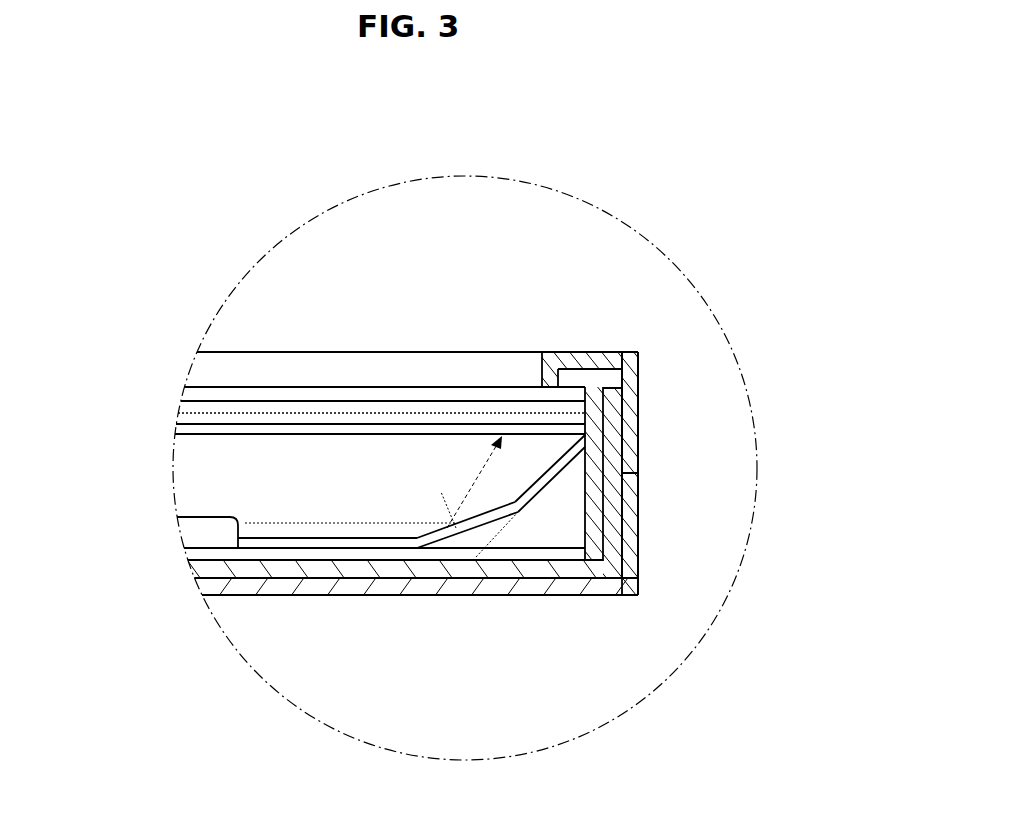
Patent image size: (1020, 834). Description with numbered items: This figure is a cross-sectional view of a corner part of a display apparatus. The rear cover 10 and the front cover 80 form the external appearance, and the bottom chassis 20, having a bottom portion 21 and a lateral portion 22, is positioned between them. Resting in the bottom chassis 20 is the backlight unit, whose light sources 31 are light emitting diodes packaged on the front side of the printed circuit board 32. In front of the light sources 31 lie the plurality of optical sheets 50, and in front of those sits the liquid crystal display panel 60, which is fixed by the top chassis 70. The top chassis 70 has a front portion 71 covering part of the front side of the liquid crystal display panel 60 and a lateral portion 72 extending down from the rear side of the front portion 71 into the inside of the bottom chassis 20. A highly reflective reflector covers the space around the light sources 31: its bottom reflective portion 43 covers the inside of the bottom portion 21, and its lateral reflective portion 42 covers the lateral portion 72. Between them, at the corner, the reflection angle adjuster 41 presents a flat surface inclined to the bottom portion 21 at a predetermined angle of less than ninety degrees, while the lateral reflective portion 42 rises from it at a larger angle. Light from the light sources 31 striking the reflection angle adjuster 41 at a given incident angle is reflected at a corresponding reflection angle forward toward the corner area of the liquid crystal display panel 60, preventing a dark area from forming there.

The rear cover 10 is at (380, 588).
The bottom chassis 20 is at (825, 643).
The bottom portion of the bottom chassis 21 is at (592, 600).
The lateral portion of the bottom chassis 22 is at (640, 555).
The light sources 31 is at (183, 542).
The printed circuit board 32 is at (337, 562).
The reflection angle adjuster 41 is at (492, 560).
The lateral reflective portion 42 is at (543, 487).
The bottom reflective portion 43 is at (262, 540).
The optical sheets 50 is at (165, 415).
The liquid crystal display panel 60 is at (203, 390).
The top chassis 70 is at (827, 363).
The front portion of the top chassis 71 is at (640, 362).
The lateral portion of the top chassis 72 is at (640, 435).
The front cover 80 is at (588, 352).